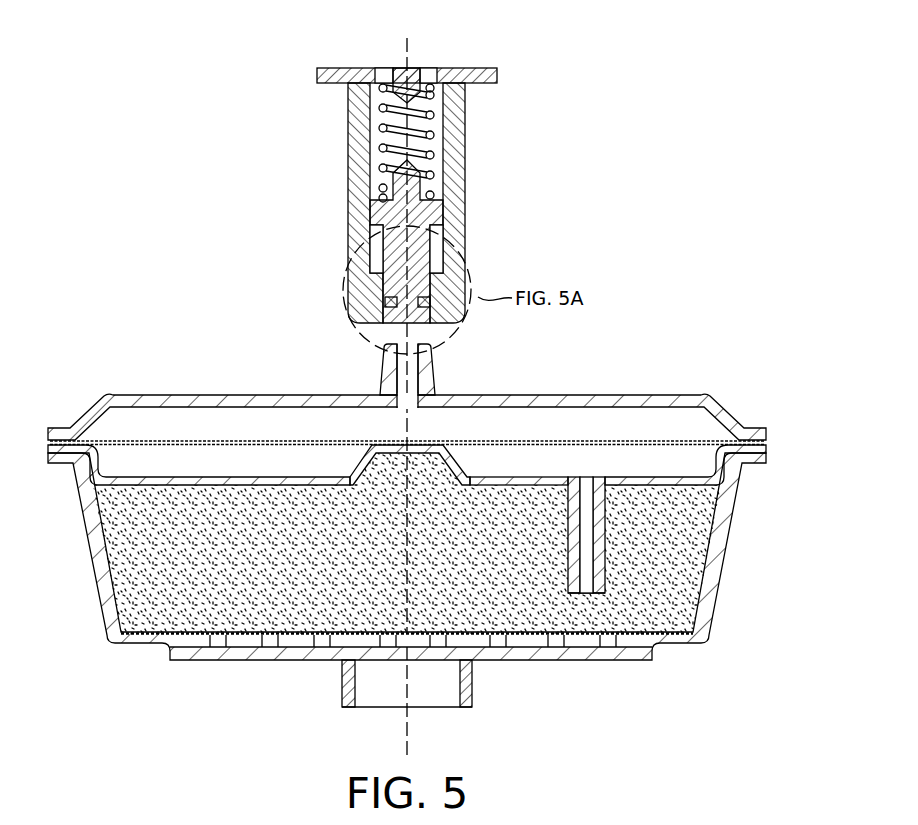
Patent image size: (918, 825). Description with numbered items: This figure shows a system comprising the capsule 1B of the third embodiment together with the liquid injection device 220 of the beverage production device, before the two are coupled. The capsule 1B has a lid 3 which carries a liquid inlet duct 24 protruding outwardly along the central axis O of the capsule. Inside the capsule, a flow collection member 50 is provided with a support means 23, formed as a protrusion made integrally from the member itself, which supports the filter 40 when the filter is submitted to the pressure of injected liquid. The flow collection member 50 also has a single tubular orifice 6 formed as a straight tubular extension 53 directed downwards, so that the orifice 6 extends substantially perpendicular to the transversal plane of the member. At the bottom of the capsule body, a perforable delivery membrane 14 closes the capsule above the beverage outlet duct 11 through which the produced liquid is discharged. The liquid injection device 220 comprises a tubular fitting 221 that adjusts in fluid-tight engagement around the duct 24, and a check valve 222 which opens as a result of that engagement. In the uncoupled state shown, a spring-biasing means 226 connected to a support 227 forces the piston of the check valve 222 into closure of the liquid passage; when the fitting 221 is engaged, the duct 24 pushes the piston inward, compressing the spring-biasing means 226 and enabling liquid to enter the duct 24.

The support 227 is at (331, 67).
The spring-biasing means 226 is at (428, 80).
The liquid injection device 220 is at (348, 107).
The check valve 222 is at (440, 186).
The tubular fitting 221 is at (352, 237).
The liquid inlet duct 24 is at (434, 374).
The lid 3 is at (198, 393).
The filter 40 is at (110, 441).
The support means 23 is at (356, 460).
The flow collection member 50 is at (142, 487).
The capsule 1B is at (79, 663).
The tubular orifice 6 is at (583, 586).
The straight tubular extension 53 is at (606, 584).
The perforable delivery membrane 14 is at (658, 622).
The beverage outlet duct 11 is at (368, 698).
The central axis O is at (449, 742).